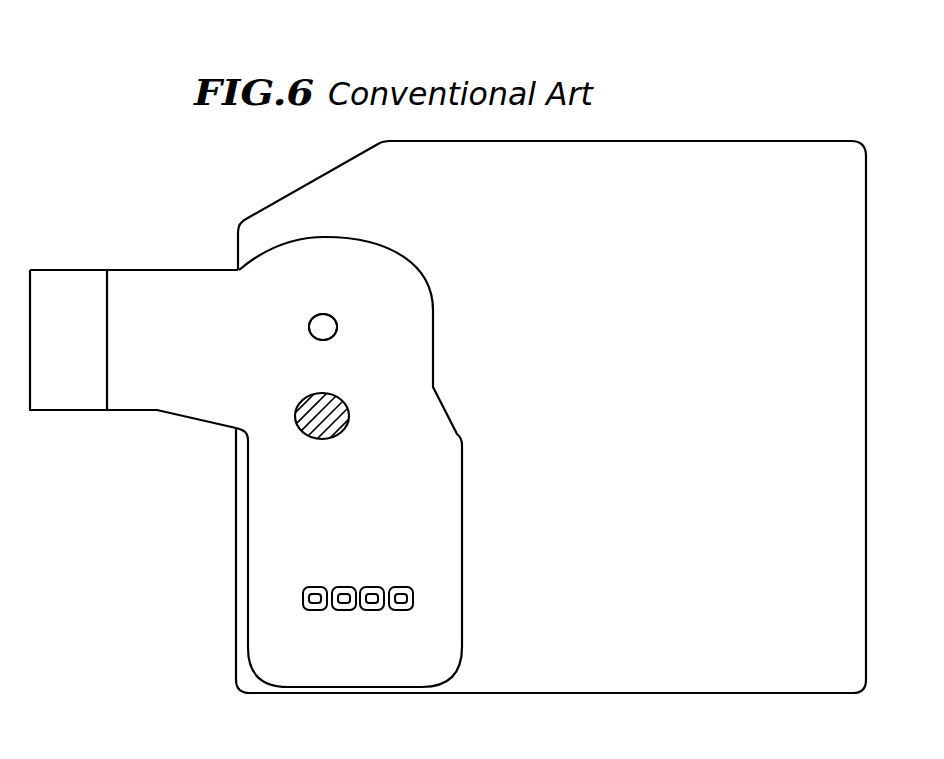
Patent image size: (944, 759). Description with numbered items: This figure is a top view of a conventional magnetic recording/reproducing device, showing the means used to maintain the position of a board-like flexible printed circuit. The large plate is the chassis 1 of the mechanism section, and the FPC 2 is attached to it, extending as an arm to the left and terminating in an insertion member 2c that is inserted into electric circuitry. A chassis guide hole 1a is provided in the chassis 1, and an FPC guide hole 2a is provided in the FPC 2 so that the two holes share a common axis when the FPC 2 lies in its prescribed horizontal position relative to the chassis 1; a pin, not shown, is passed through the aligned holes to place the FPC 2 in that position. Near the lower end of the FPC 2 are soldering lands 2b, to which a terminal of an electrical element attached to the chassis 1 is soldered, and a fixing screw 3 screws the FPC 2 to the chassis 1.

The chassis 1 is at (698, 153).
The chassis guide hole 1a is at (338, 327).
The FPC 2 is at (180, 285).
The FPC guide hole 2a is at (394, 323).
The soldering land 2b is at (420, 612).
The insertion member 2c is at (78, 285).
The fixing screw 3 is at (350, 414).